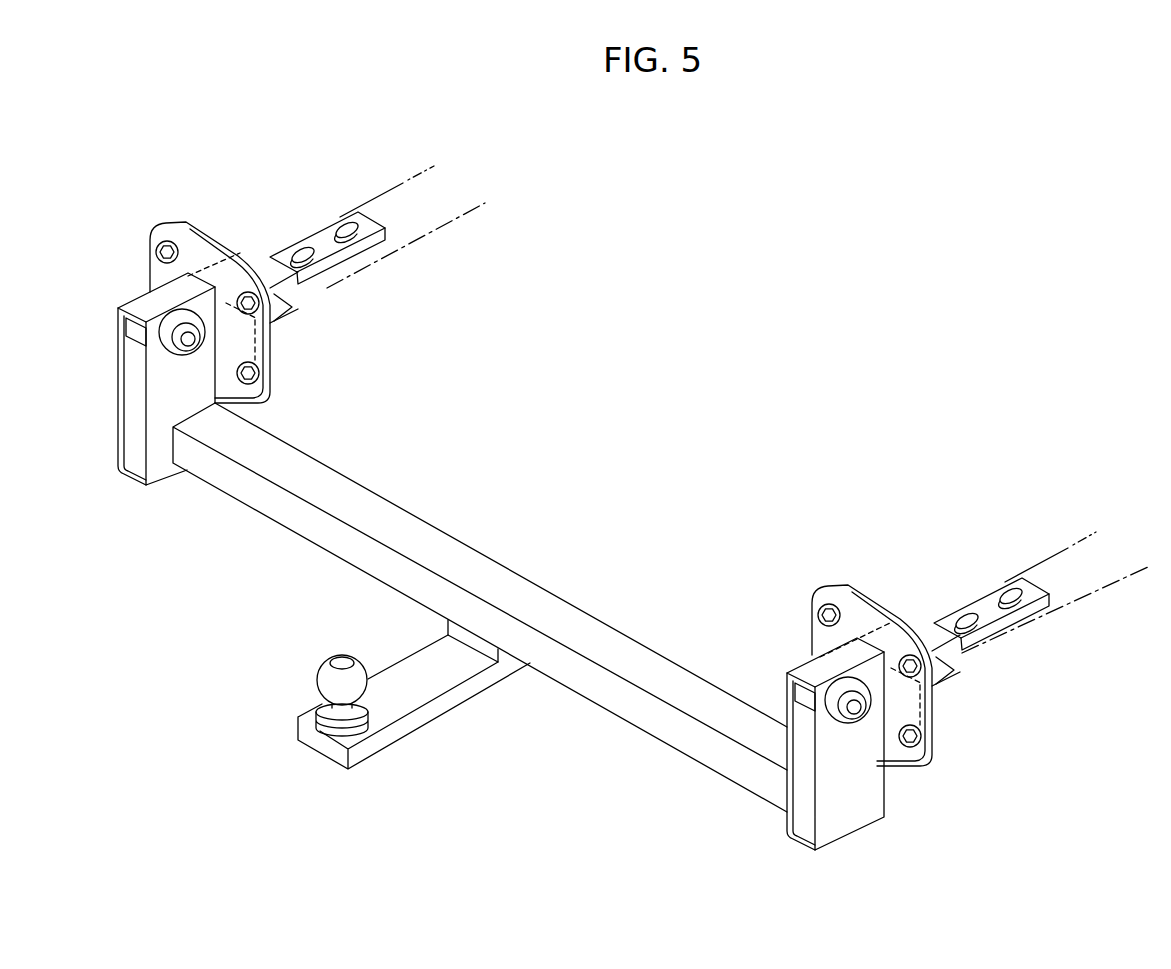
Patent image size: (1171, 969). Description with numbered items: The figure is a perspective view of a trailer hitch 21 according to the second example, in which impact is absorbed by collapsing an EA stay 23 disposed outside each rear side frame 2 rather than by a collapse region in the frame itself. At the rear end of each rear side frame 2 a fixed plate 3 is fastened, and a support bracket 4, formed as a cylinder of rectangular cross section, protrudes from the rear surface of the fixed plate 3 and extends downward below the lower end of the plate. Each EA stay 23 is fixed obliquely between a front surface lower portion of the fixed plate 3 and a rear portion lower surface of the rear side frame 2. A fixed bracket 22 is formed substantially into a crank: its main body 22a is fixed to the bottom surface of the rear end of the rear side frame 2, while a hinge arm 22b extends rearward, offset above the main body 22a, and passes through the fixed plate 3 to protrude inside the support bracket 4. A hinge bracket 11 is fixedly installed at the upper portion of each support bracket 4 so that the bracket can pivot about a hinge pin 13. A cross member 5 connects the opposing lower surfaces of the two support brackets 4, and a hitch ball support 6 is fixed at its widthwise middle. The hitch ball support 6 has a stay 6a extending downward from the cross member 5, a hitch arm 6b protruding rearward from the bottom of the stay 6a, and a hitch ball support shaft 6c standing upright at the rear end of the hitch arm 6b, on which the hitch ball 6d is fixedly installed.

The rear side frame 2 is at (410, 178).
The fixed plate 3 is at (153, 273).
The support bracket 4 is at (121, 392).
The cross member 5 is at (644, 715).
The hitch ball support 6 is at (405, 708).
The stay 6a is at (446, 627).
The hitch arm 6b is at (427, 713).
The hitch ball support shaft 6c is at (323, 713).
The hitch ball 6d is at (318, 681).
The hinge bracket 11 is at (183, 366).
The hinge pin 13 is at (140, 307).
The trailer hitch 21 is at (222, 546).
The fixed bracket 22 is at (295, 130).
The main body 22a is at (316, 238).
The hinge arm 22b is at (208, 253).
The EA stay 23 is at (289, 323).